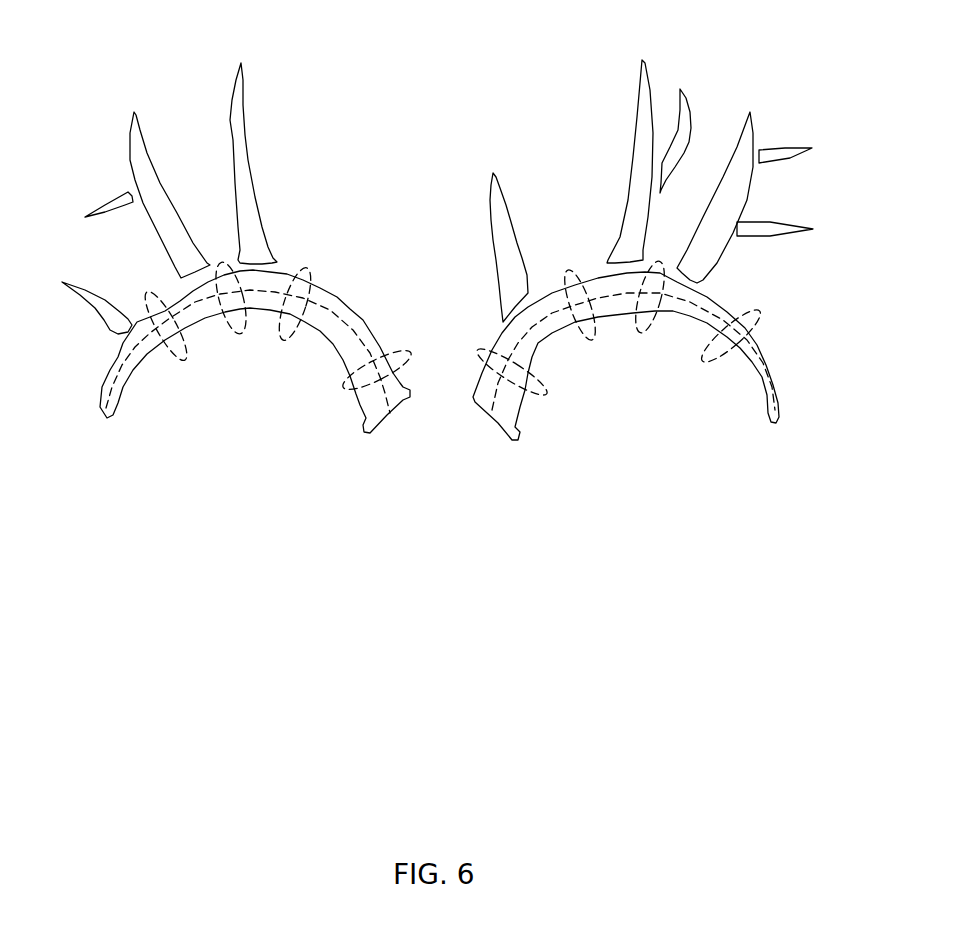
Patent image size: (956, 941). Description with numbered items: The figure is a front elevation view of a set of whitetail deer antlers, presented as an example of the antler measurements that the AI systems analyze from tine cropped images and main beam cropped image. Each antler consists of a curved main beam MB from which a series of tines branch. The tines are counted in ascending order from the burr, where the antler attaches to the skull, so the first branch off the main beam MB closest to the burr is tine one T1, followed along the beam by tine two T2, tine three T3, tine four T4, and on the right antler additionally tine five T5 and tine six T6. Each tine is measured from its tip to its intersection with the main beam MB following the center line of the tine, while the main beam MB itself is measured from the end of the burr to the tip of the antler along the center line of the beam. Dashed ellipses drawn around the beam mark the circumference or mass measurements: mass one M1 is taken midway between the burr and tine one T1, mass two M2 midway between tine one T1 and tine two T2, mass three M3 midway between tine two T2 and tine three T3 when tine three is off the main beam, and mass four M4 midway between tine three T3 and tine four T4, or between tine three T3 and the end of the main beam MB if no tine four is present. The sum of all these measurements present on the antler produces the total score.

The main beam MB is at (454, 361).
The tine one T1 is at (376, 172).
The tine two T2 is at (388, 153).
The tine three T3 is at (390, 137).
The tine four T4 is at (397, 208).
The tine five T5 is at (791, 229).
The tine six T6 is at (802, 149).
The mass one M1 is at (444, 379).
The mass two M2 is at (439, 316).
The mass three M3 is at (440, 311).
The mass four M4 is at (452, 339).